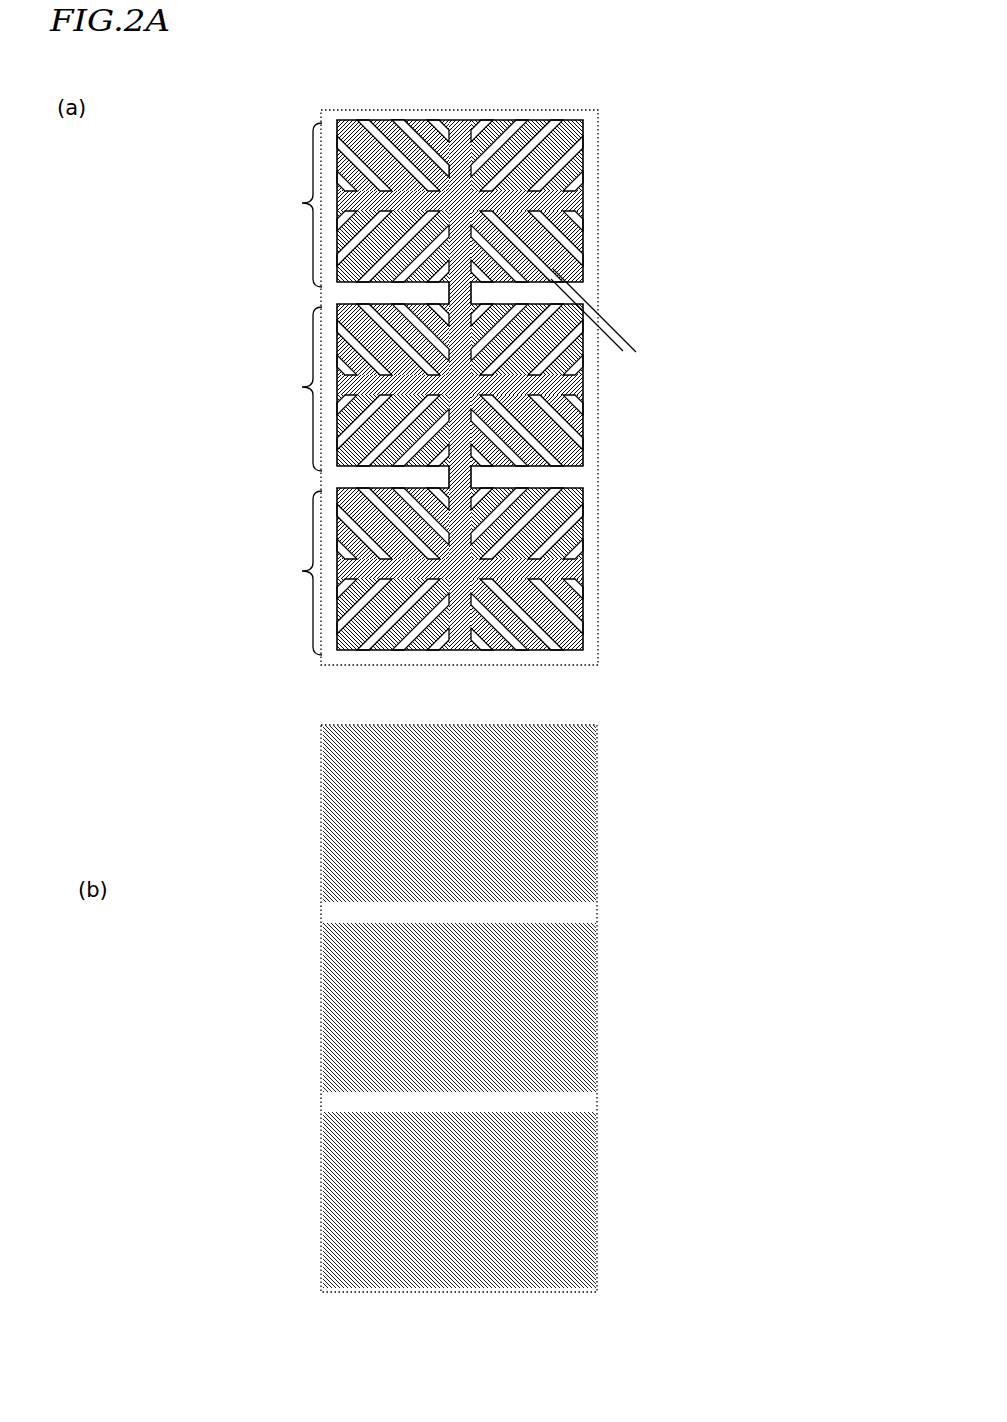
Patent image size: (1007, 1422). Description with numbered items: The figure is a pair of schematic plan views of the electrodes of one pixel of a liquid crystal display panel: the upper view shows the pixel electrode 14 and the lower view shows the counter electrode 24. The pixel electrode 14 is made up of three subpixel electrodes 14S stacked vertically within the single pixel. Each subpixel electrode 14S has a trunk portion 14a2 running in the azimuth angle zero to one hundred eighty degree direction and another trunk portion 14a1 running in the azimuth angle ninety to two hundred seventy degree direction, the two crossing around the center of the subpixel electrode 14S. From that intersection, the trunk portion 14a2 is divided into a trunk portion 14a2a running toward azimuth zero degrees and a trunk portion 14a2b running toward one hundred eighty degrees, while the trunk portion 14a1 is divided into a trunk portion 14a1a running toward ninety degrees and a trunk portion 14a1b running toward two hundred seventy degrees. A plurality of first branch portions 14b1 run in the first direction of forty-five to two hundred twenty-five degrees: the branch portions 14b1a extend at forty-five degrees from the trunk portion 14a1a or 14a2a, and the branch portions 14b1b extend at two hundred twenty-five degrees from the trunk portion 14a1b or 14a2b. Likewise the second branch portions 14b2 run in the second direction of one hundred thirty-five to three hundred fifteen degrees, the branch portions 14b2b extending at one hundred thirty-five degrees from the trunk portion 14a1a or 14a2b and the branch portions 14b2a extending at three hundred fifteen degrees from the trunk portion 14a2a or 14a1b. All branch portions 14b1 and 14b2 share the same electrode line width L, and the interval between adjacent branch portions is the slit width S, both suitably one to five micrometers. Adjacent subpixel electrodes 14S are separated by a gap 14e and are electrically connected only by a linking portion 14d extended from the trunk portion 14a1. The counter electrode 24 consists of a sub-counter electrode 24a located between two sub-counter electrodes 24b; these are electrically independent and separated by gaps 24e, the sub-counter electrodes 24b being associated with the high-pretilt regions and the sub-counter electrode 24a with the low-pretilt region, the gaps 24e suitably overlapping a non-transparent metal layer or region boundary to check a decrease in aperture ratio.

The pixel electrode 14 is at (642, 102).
The subpixel electrode 14S is at (461, 346).
The trunk portion 14a1 is at (565, 344).
The trunk portion 14a1a is at (461, 138).
The trunk portion 14a1b is at (468, 245).
The trunk portion 14a2 is at (442, 311).
The trunk portion 14a2a is at (523, 205).
The trunk portion 14a2b is at (350, 207).
The first branch portions 14b1 is at (444, 382).
The branch portions 14b1a is at (582, 148).
The branch portions 14b1b is at (350, 245).
The second branch portions 14b2 is at (461, 385).
The branch portions 14b2a is at (578, 278).
The branch portions 14b2b is at (352, 167).
The linking portion 14d is at (458, 293).
The gap 14e is at (344, 298).
The slit width S is at (400, 128).
The electrode line width L is at (651, 300).
The counter electrode 24 is at (640, 766).
The sub-counter electrode 24a is at (343, 1003).
The sub-counter electrode 24b is at (345, 826).
The gap 24e is at (340, 913).